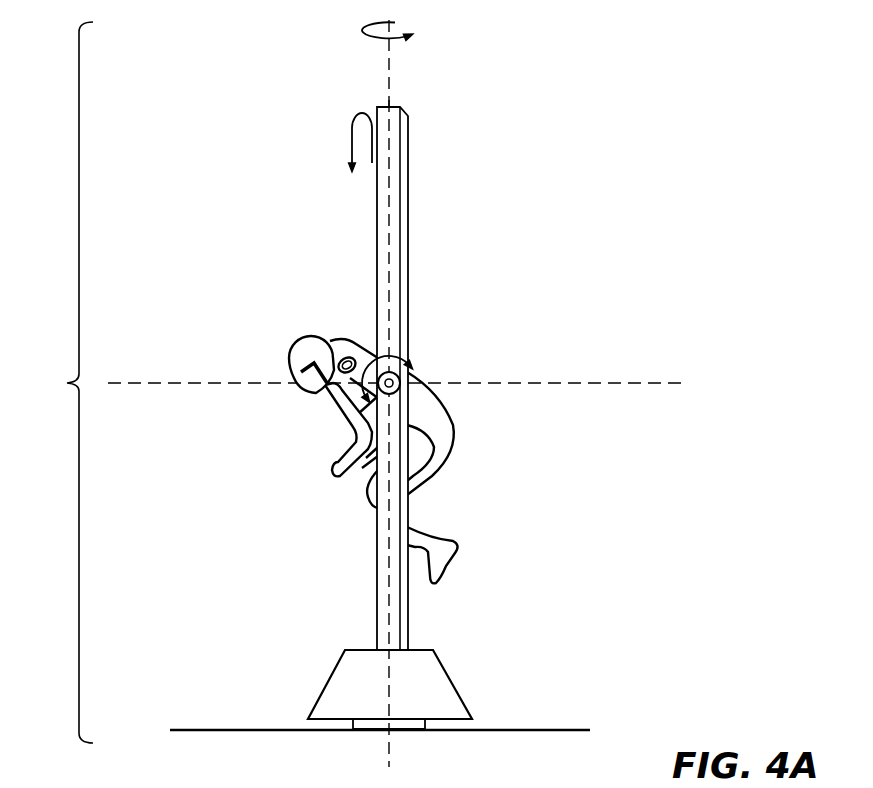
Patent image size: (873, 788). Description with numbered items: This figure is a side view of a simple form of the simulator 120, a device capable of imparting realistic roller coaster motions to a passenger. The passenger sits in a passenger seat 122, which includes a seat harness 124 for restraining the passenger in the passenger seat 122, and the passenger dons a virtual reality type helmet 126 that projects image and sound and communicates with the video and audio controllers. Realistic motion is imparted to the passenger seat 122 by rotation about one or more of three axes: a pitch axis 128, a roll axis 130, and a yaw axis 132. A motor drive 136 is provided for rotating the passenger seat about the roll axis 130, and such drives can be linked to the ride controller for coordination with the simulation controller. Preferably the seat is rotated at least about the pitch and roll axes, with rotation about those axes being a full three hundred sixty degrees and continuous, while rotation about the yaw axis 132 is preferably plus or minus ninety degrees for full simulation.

The simulator 120 is at (51, 382).
The passenger seat 122 is at (435, 420).
The seat harness 124 is at (327, 397).
The virtual reality type helmet 126 is at (289, 349).
The pitch axis 128 is at (401, 383).
The roll axis 130 is at (622, 380).
The yaw axis 132 is at (390, 88).
The motor drive 136 is at (432, 683).